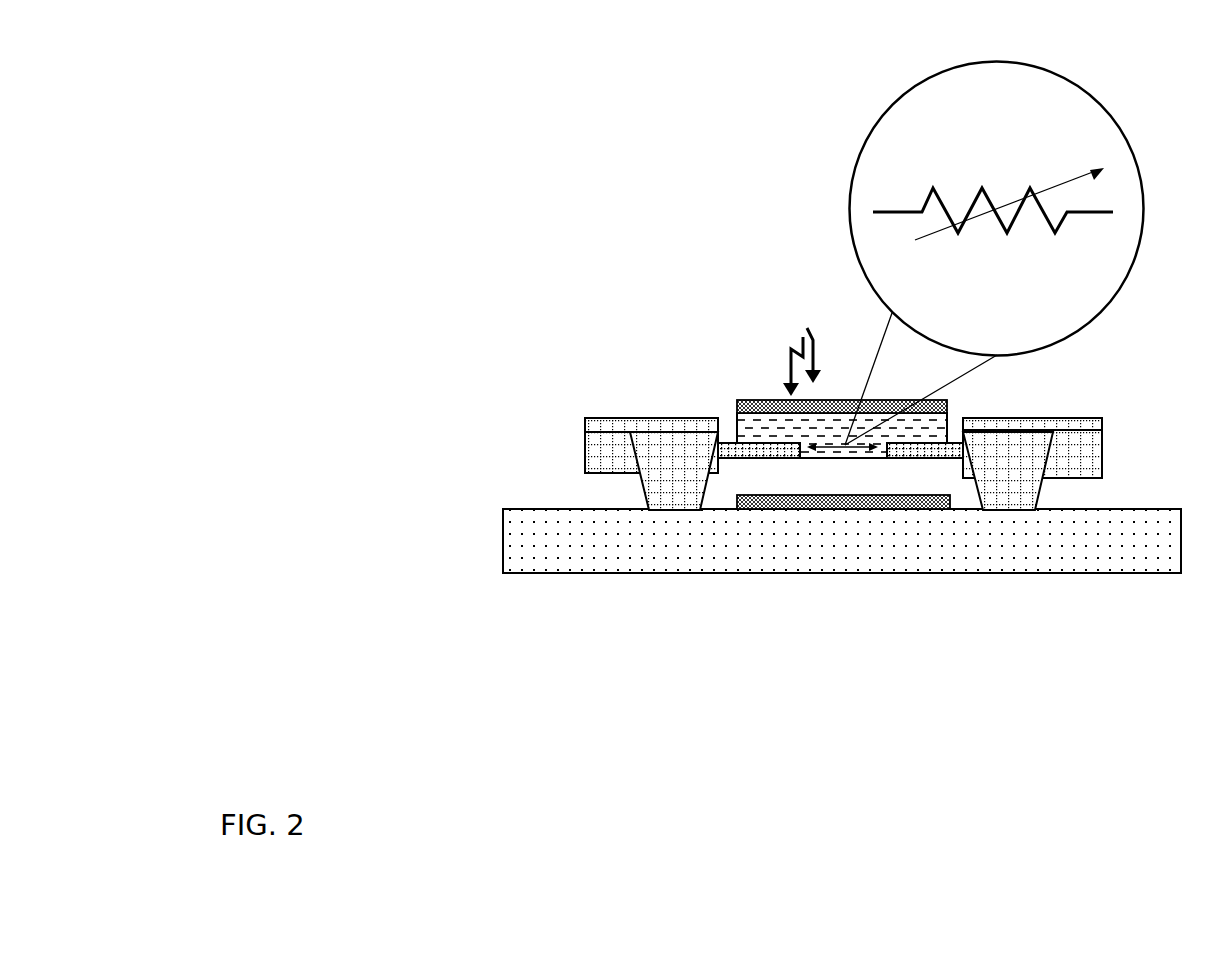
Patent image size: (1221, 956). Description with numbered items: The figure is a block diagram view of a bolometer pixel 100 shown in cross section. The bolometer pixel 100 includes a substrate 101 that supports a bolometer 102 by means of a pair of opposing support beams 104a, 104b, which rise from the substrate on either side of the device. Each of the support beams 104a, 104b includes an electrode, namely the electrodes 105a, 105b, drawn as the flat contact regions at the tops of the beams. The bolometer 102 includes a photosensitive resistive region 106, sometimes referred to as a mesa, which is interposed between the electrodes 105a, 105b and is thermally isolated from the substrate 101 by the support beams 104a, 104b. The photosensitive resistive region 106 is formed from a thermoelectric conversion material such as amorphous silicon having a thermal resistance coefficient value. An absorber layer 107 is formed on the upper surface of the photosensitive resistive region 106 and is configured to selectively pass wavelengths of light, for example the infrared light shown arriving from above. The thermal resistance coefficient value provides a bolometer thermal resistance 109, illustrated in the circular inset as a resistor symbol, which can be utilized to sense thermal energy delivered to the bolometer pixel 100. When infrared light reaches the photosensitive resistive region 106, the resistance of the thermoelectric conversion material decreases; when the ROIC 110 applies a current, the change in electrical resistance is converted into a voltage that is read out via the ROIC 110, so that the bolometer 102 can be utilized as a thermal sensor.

The bolometer pixel 100 is at (482, 297).
The substrate 101 is at (512, 542).
The bolometer 102 is at (855, 397).
The support beam 104a is at (650, 502).
The support beam 104b is at (1035, 500).
The electrode 105a is at (592, 425).
The electrode 105b is at (1092, 425).
The photosensitive resistive region 106 is at (752, 427).
The absorber layer 107 is at (755, 402).
The bolometer thermal resistance 109 is at (1115, 117).
The ROIC 110 is at (835, 498).